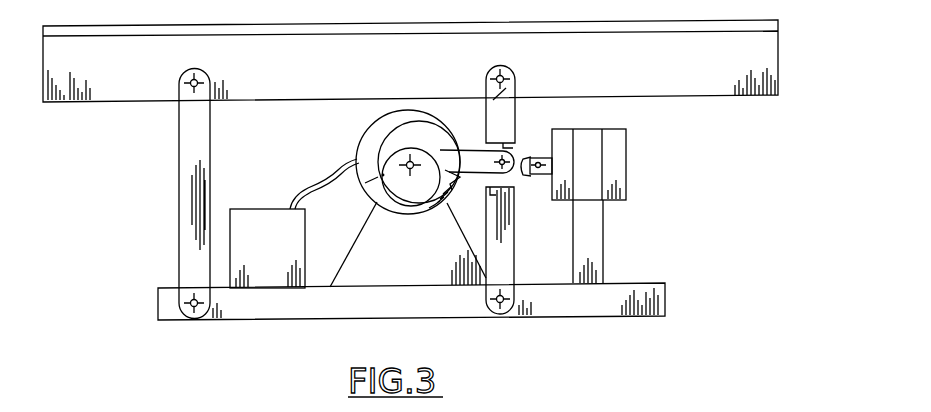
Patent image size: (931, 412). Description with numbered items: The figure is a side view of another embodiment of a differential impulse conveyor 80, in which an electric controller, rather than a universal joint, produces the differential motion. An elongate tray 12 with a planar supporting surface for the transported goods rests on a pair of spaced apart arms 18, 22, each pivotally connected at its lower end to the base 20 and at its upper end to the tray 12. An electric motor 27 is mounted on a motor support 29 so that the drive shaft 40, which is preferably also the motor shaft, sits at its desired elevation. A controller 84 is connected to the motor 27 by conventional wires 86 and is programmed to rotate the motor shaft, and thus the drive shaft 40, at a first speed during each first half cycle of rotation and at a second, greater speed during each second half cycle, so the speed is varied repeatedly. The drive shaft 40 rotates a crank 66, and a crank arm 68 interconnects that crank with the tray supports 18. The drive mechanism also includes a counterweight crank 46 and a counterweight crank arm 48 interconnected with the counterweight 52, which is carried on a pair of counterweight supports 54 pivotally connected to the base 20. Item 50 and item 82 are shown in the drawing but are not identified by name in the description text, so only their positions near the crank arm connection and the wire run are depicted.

The tray 12 is at (750, 58).
The arm 18 is at (535, 82).
The base 20 is at (405, 305).
The arm 22 is at (196, 150).
The electric motor 27 is at (373, 142).
The motor support 29 is at (422, 266).
The drive shaft 40 is at (413, 160).
The counterweight crank 46 is at (357, 192).
The counterweight crank arm 48 is at (517, 178).
The pin 50 is at (528, 150).
The counterweight 52 is at (618, 162).
The counterweight support 54 is at (598, 234).
The crank 66 is at (433, 150).
The crank arm 68 is at (478, 153).
The differential impulse conveyor 80 is at (153, 218).
The cable region 82 is at (313, 160).
The controller 84 is at (285, 256).
The wires 86 is at (305, 187).